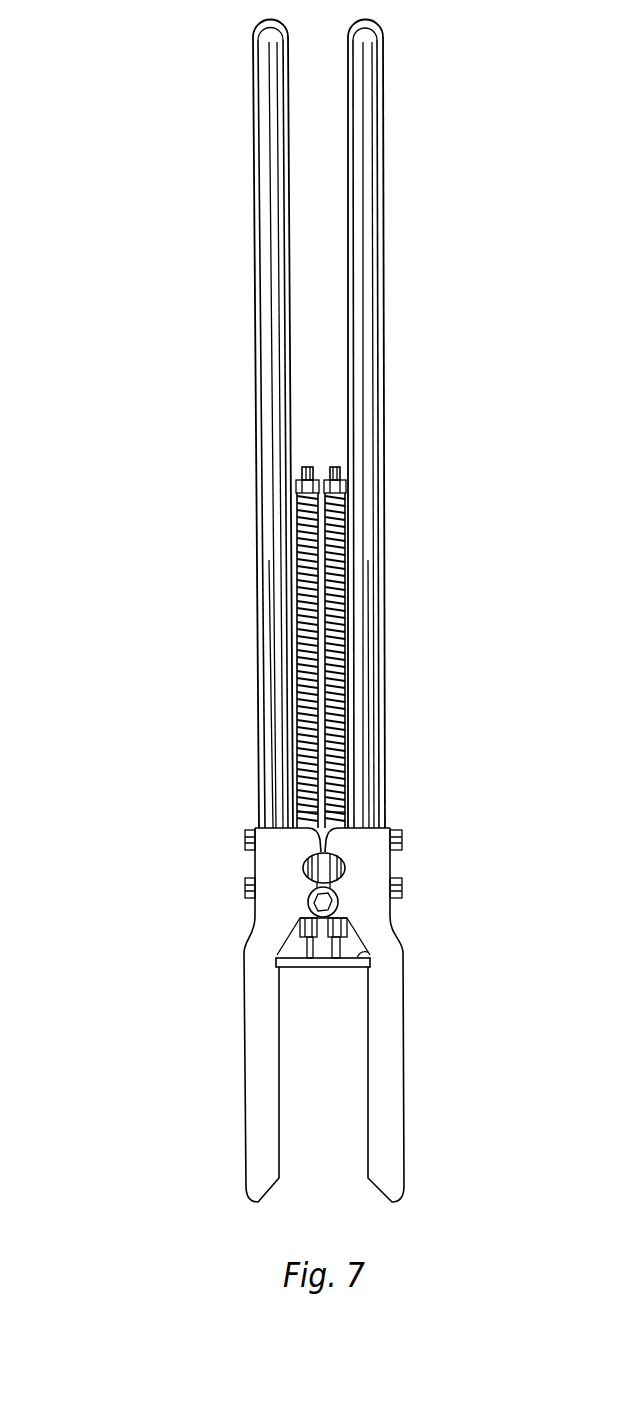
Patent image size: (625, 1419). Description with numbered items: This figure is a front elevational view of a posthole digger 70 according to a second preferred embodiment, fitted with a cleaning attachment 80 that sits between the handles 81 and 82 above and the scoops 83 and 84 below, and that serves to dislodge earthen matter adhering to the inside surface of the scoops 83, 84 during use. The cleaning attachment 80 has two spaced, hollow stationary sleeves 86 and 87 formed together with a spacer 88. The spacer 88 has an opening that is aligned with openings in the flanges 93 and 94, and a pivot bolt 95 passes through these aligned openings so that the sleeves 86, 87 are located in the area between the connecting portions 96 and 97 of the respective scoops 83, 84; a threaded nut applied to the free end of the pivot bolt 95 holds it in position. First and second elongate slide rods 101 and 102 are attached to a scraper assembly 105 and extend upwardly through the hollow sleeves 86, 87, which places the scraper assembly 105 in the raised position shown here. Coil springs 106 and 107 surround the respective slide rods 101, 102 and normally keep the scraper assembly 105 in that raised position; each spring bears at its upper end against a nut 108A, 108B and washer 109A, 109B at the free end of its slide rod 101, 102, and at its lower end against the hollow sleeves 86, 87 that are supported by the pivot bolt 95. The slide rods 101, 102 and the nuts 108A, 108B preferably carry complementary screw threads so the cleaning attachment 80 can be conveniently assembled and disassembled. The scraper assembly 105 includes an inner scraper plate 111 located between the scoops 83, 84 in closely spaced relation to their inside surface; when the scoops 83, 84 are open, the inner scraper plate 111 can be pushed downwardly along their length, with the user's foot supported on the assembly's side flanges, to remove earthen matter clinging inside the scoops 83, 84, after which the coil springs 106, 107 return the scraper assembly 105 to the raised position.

The posthole digger 70 is at (165, 187).
The cleaning attachment 80 is at (323, 320).
The handle 81 is at (265, 137).
The handle 82 is at (362, 122).
The scoop 83 is at (258, 1117).
The scoop 84 is at (392, 1090).
The hollow stationary sleeve 86 is at (300, 817).
The hollow stationary sleeve 87 is at (350, 818).
The spacer 88 is at (347, 862).
The flange 93 is at (275, 862).
The flange 94 is at (360, 899).
The pivot bolt 95 is at (255, 915).
The connecting portion 96 is at (320, 902).
The connecting portion 97 is at (397, 922).
The first elongate slide rod 101 is at (270, 698).
The second elongate slide rod 102 is at (337, 668).
The scraper assembly 105 is at (318, 990).
The coil spring 106 is at (290, 592).
The coil spring 107 is at (342, 565).
The nut 108A is at (300, 482).
The nut 108B is at (347, 483).
The washer 109A is at (298, 483).
The washer 109B is at (345, 487).
The inner scraper plate 111 is at (373, 955).